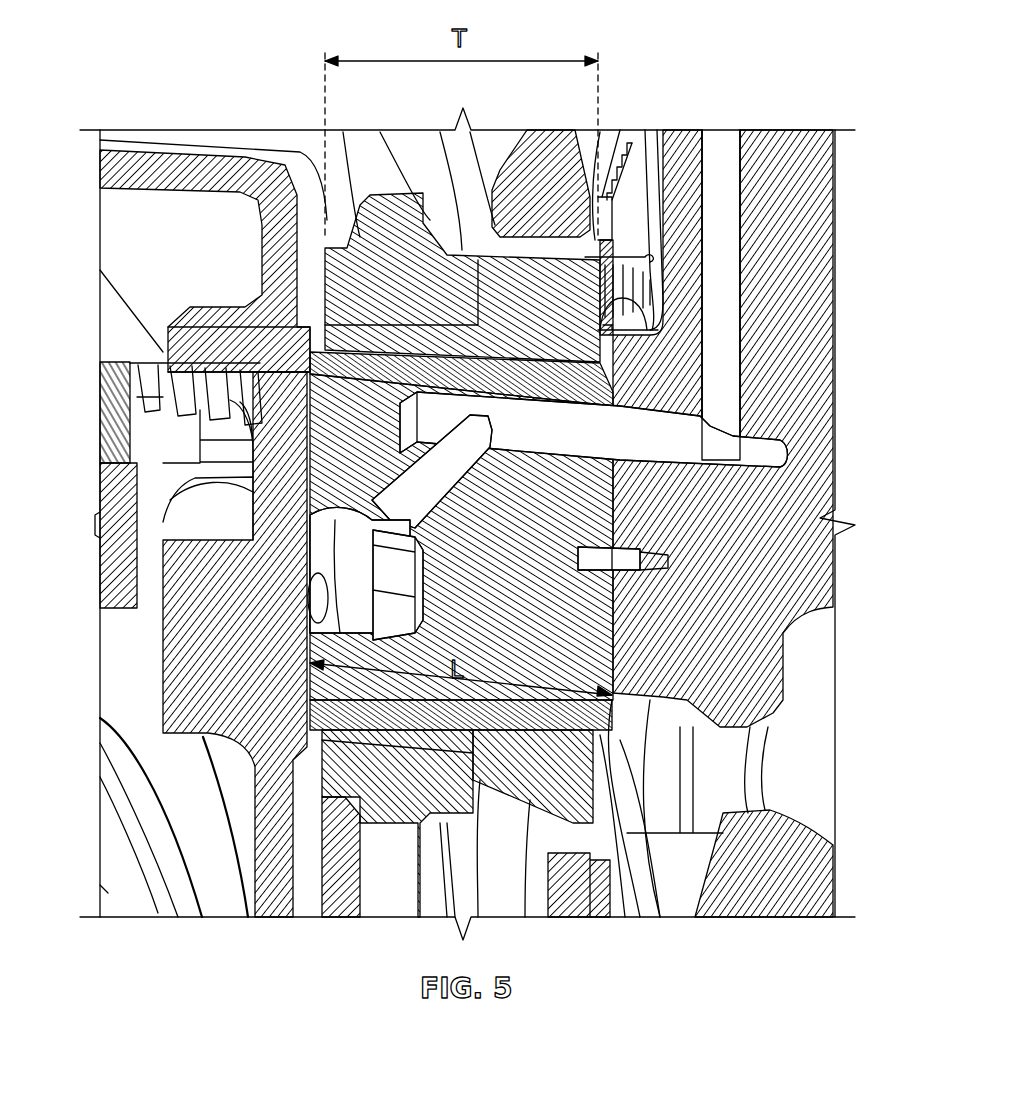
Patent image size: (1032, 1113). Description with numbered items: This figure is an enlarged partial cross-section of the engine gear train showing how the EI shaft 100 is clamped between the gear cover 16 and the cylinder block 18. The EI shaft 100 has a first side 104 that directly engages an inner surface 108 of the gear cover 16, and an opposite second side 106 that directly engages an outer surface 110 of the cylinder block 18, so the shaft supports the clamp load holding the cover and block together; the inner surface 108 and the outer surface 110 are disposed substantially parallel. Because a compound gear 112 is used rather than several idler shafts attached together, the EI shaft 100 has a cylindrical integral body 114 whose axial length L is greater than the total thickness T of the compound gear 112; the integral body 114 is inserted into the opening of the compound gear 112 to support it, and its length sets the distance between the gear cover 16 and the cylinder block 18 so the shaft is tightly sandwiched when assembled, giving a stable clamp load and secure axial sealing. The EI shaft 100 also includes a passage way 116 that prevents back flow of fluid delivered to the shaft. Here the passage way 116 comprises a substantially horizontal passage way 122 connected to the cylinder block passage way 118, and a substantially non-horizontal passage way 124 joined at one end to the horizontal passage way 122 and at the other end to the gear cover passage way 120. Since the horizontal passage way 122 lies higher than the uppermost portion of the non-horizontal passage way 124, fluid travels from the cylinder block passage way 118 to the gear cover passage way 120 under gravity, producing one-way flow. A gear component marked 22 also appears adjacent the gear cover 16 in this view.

The gear cover 16 is at (100, 162).
The cylinder block 18 is at (615, 565).
The gear 22 is at (222, 428).
The EI shaft 100 is at (307, 680).
The first side 104 is at (300, 445).
The second side 106 is at (755, 683).
The inner surface 108 is at (312, 380).
The outer surface 110 is at (615, 492).
The compound gear 112 is at (383, 208).
The integral body 114 is at (515, 655).
The passage way 116 is at (600, 385).
The cylinder block passage way 118 is at (720, 165).
The gear cover passage way 120 is at (312, 602).
The horizontal passage way 122 is at (555, 410).
The non-horizontal passage way 124 is at (400, 483).